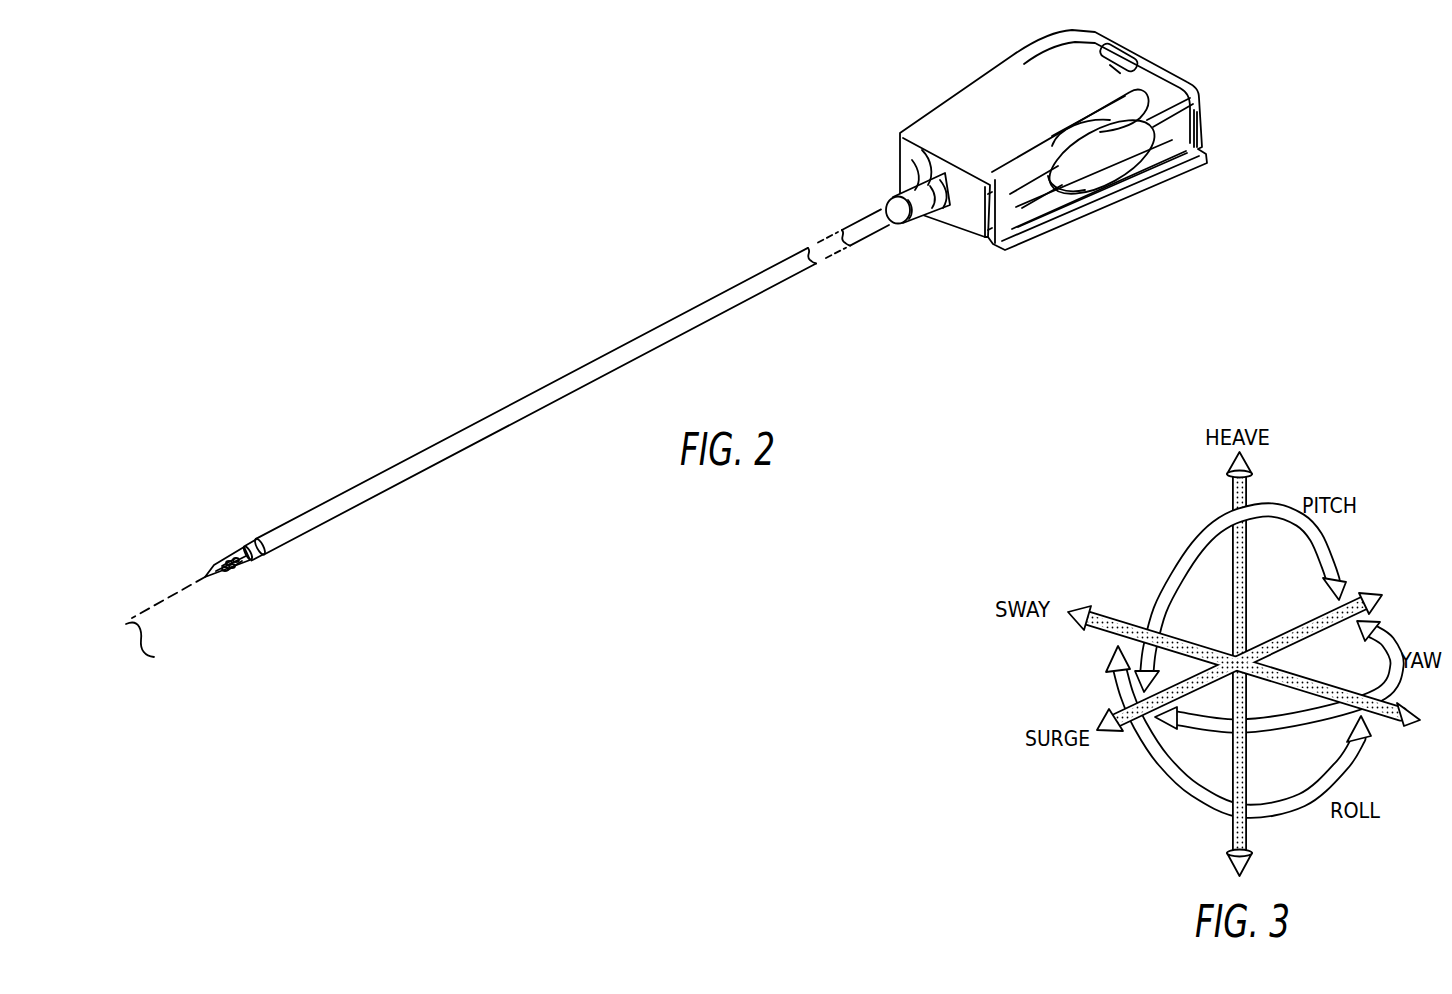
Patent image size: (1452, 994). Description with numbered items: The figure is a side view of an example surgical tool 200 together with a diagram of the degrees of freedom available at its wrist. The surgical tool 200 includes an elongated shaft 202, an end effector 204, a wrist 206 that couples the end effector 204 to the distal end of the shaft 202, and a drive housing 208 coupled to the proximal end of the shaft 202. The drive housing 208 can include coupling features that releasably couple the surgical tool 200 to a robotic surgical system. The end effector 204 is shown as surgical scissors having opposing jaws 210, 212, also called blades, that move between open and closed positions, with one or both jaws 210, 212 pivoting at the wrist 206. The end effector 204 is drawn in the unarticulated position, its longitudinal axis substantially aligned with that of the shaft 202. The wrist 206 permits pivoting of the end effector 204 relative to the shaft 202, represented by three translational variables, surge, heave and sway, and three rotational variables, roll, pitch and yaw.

The surgical tool 200 is at (930, 324).
The elongated shaft 202 is at (667, 323).
The end effector 204 is at (217, 545).
The wrist 206 is at (258, 578).
The drive housing 208 is at (993, 68).
The opposing jaw 210 is at (214, 563).
The opposing jaw 212 is at (220, 579).